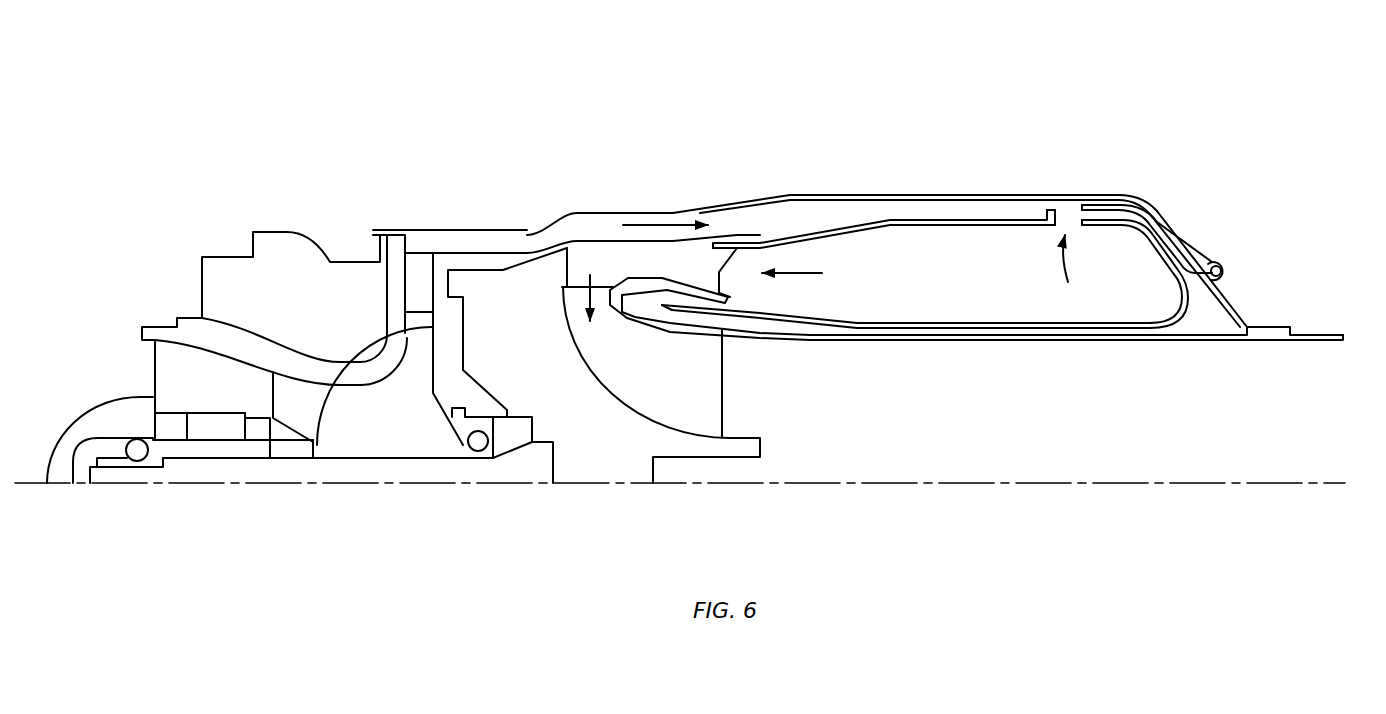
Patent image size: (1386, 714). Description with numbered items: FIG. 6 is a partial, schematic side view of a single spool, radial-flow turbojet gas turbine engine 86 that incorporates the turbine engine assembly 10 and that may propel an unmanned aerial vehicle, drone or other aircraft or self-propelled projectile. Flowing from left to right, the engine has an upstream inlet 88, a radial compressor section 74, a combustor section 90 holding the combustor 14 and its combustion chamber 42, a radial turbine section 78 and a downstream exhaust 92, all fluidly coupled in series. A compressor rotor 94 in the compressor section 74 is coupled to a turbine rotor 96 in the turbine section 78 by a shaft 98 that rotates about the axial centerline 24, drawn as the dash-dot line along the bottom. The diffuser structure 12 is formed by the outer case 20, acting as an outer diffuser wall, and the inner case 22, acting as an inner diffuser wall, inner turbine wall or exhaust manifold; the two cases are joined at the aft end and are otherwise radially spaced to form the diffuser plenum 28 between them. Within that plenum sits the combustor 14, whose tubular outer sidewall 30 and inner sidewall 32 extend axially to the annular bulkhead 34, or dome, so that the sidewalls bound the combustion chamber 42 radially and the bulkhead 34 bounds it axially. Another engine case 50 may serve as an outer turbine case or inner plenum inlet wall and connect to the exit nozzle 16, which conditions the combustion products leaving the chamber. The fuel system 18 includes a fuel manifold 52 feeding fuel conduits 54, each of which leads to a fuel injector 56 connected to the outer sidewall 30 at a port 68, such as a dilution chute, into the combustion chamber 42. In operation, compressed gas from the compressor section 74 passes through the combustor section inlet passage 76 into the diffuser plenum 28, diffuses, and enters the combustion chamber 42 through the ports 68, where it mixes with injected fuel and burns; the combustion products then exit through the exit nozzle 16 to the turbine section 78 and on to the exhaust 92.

The turbine engine assembly 10 is at (1147, 183).
The diffuser structure 12 is at (840, 190).
The combustor 14 is at (908, 218).
The exit nozzle 16 is at (673, 252).
The fuel system 18 is at (1232, 263).
The outer case 20 is at (1037, 195).
The inner case 22 is at (945, 342).
The axial centerline 24 is at (1308, 487).
The diffuser plenum 28 is at (1200, 320).
The combustor outer sidewall 30 is at (920, 228).
The combustor inner sidewall 32 is at (910, 322).
The combustor bulkhead 34 is at (1178, 288).
The combustion chamber 42 is at (1005, 308).
The turbine engine case 50 is at (617, 252).
The fuel manifold 52 is at (1221, 257).
The fuel conduit 54 is at (1166, 215).
The fuel injector 56 is at (1086, 201).
The port 68 is at (1075, 273).
The compressor section 74 is at (358, 358).
The combustor section inlet passage 76 is at (591, 232).
The turbine section 78 is at (785, 411).
The gas turbine engine 86 is at (181, 143).
The upstream inlet 88 is at (148, 368).
The combustor section 90 is at (960, 190).
The downstream exhaust 92 is at (1300, 391).
The compressor rotor 94 is at (405, 447).
The turbine rotor 96 is at (689, 450).
The shaft 98 is at (303, 472).